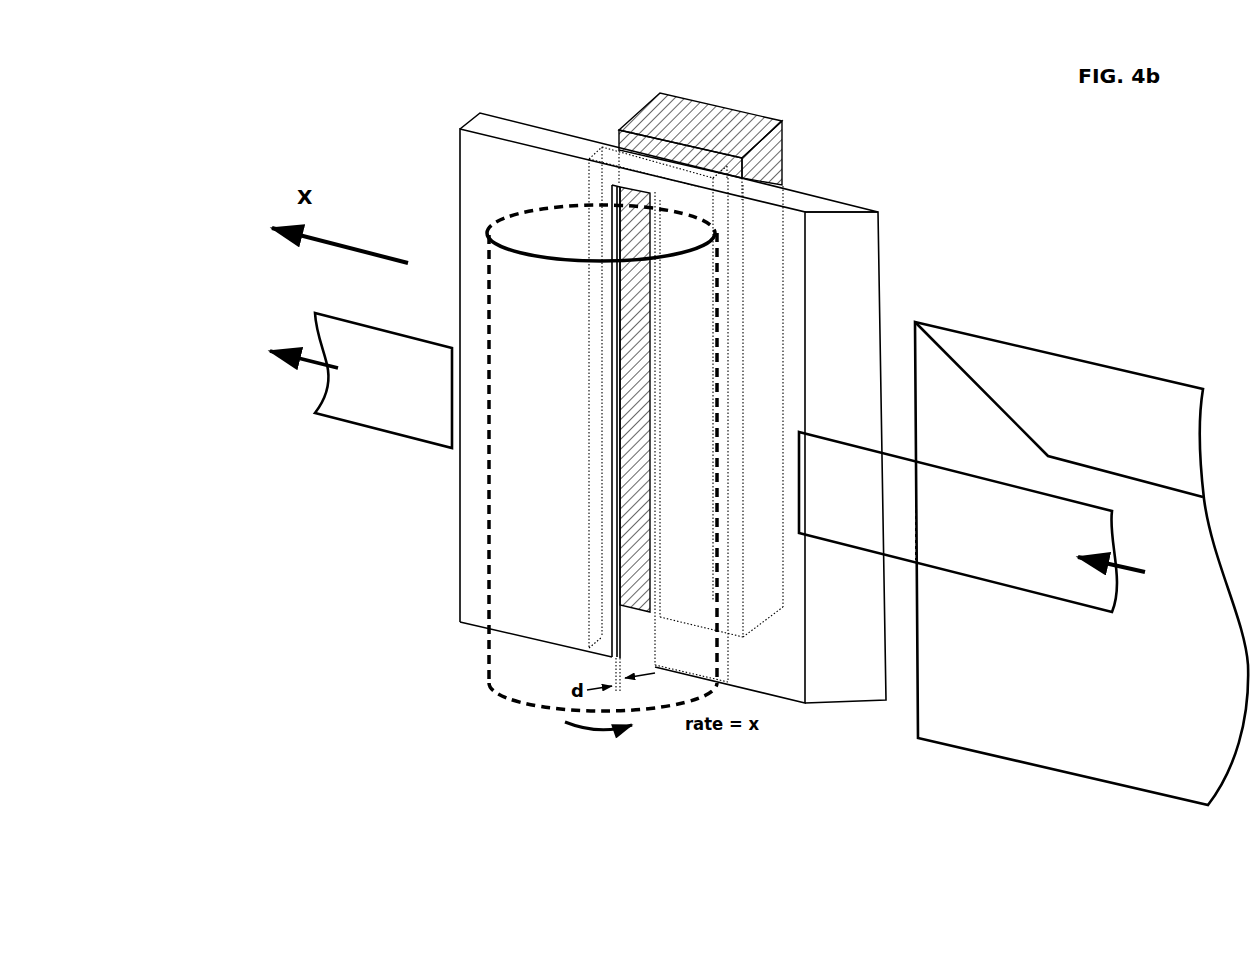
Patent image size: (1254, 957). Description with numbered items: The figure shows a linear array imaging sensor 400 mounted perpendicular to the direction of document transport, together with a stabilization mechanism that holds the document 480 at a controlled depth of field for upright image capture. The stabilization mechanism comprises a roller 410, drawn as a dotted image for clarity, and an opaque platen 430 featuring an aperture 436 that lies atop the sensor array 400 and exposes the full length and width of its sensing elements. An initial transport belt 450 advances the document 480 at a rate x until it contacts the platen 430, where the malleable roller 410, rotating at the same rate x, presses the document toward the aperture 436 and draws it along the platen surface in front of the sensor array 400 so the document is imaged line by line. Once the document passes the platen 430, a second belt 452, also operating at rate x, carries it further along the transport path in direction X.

The linear array imaging sensor 400 is at (784, 144).
The roller 410 is at (527, 205).
The platen 430 is at (461, 584).
The aperture 436 is at (634, 186).
The initial transport belt 450 is at (846, 438).
The second belt 452 is at (393, 437).
The document 480 is at (1092, 360).